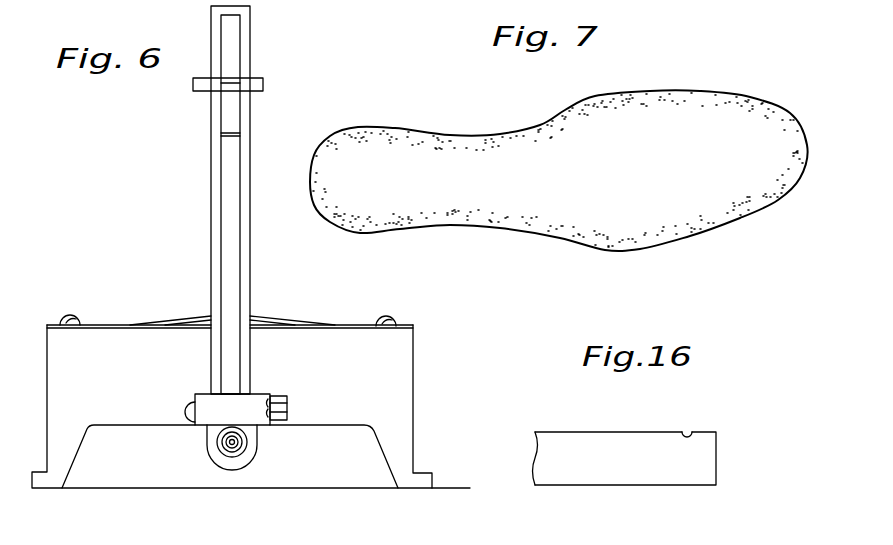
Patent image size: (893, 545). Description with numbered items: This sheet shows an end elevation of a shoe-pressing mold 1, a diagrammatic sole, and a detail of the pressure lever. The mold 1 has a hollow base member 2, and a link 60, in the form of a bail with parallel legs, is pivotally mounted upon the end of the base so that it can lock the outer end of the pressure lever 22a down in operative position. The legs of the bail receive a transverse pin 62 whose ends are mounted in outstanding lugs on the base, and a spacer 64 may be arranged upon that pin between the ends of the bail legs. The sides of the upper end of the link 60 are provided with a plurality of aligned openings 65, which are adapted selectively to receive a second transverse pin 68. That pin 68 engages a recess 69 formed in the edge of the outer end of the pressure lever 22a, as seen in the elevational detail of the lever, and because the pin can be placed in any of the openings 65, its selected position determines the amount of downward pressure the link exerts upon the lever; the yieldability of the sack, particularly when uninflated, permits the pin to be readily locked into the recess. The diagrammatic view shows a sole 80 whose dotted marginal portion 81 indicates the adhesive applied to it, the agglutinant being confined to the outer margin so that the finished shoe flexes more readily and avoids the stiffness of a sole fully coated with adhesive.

In FIG. 6, the mold 1 is at (424, 402).
In FIG. 6, the hollow base member 2 is at (405, 430).
In FIG. 6, the pressure lever 22a is at (232, 116).
In FIG. 16, the pressure lever 22a is at (705, 475).
In FIG. 6, the link 60 is at (252, 245).
In FIG. 6, the transverse pin 62 is at (193, 413).
In FIG. 6, the spacer 64 is at (233, 413).
In FIG. 6, the aligned openings 65 is at (290, 408).
In FIG. 6, the transverse pin 68 is at (200, 84).
In FIG. 16, the recess 69 is at (692, 433).
In FIG. 7, the sole 80 is at (647, 251).
In FIG. 7, the dotted marginal portion 81 is at (741, 191).